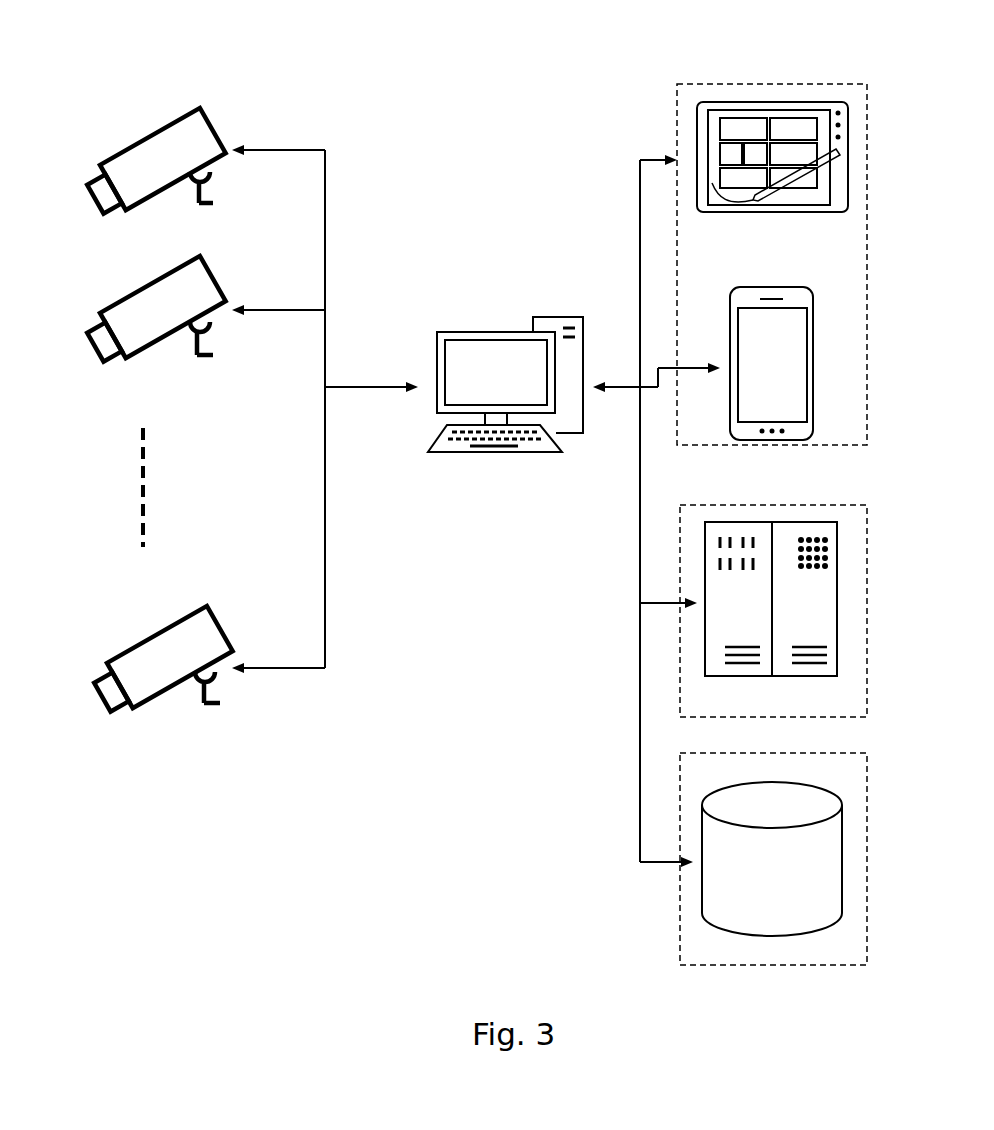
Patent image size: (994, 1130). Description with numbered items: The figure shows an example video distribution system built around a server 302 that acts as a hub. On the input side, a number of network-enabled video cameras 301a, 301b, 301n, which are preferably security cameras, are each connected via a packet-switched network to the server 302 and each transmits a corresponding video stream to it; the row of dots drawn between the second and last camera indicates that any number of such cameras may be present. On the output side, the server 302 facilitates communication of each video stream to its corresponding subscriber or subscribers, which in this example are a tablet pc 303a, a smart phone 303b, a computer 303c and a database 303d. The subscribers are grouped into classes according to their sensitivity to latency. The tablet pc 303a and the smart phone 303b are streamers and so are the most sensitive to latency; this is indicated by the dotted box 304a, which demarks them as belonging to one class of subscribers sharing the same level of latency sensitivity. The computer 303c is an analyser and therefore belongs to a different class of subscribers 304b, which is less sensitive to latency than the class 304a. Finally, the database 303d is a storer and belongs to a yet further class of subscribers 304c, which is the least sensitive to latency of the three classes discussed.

The video camera 301a is at (125, 128).
The video camera 301b is at (100, 292).
The video camera 301n is at (108, 642).
The server 302 is at (492, 328).
The tablet pc 303a is at (740, 102).
The smart phone 303b is at (813, 378).
The computer 303c is at (833, 670).
The database 303d is at (783, 935).
The dotted box 304a is at (677, 107).
The class of subscribers 304b is at (680, 552).
The class of subscribers 304c is at (680, 781).